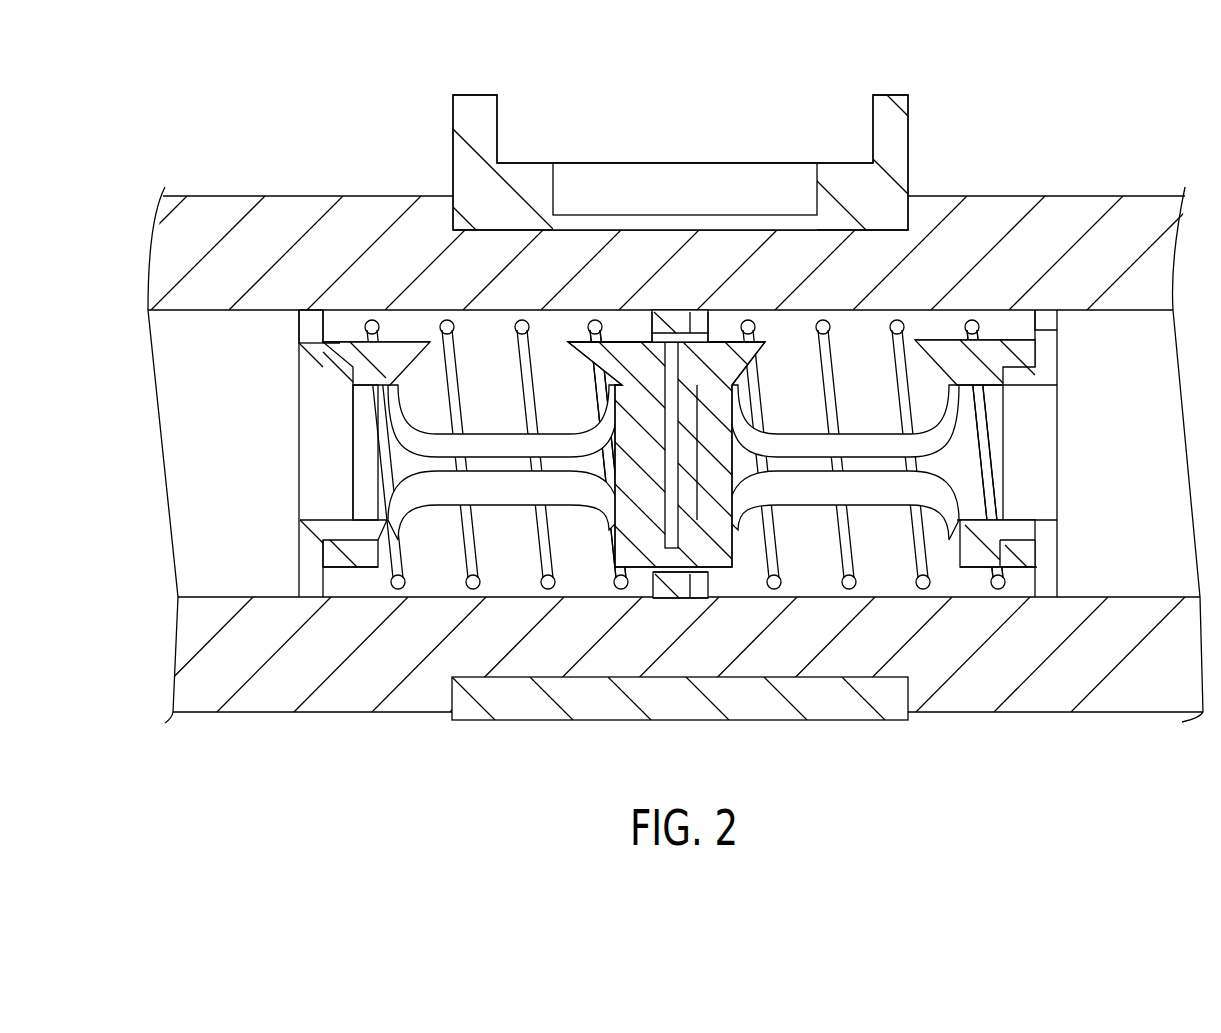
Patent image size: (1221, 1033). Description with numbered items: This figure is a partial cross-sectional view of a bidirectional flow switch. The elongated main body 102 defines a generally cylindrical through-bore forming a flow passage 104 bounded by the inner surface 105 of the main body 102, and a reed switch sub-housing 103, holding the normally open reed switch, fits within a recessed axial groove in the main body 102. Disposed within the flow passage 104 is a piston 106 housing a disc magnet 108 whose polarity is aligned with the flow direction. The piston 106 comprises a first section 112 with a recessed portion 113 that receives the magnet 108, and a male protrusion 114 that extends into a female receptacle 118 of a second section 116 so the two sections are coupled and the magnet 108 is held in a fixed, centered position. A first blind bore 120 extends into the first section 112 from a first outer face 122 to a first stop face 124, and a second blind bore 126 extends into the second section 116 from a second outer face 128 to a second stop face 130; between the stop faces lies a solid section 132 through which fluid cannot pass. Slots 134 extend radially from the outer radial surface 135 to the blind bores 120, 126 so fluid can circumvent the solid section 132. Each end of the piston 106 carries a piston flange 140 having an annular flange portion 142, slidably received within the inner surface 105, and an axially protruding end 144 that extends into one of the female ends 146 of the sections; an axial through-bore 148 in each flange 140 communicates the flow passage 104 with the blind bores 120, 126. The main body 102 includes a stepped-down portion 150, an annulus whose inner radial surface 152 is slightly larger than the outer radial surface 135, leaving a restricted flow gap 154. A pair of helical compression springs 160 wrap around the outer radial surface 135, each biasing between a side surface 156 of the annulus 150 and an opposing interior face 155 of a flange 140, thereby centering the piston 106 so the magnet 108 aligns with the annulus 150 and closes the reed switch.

The main body 102 is at (227, 196).
The reed switch sub-housing 103 is at (897, 97).
The flow passage 104 is at (185, 397).
The inner surface 105 is at (193, 598).
The piston 106 is at (740, 337).
The magnet 108 is at (683, 437).
The first section 112 is at (970, 562).
The recessed portion 113 is at (773, 562).
The male protrusion 114 is at (740, 562).
The second section 116 is at (380, 565).
The female receptacle 118 is at (612, 378).
The first blind bore 120 is at (1017, 562).
The first outer face 122 is at (1028, 392).
The first stop face 124 is at (888, 562).
The second blind bore 126 is at (372, 565).
The second outer face 128 is at (355, 530).
The second stop face 130 is at (537, 562).
The solid section 132 is at (652, 562).
The slots 134 is at (405, 433).
The outer radial surface 135 is at (395, 340).
The piston flange 140 is at (308, 375).
The flange portion 142 is at (310, 322).
The axially protruding end 144 is at (343, 393).
The female ends 146 is at (310, 357).
The axial through-bore 148 is at (300, 522).
The stepped-down portion 150 is at (683, 328).
The inner radial surface 152 is at (673, 333).
The restricted flow gap 154 is at (707, 337).
The interior face 155 is at (337, 327).
The side surfaces 156 is at (653, 330).
The helical compression springs 160 is at (552, 565).